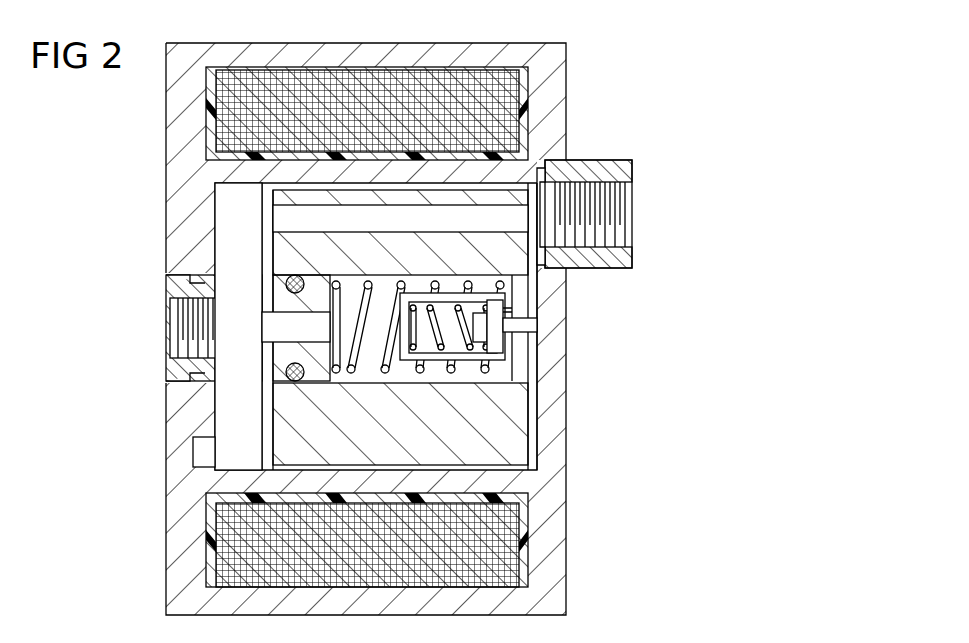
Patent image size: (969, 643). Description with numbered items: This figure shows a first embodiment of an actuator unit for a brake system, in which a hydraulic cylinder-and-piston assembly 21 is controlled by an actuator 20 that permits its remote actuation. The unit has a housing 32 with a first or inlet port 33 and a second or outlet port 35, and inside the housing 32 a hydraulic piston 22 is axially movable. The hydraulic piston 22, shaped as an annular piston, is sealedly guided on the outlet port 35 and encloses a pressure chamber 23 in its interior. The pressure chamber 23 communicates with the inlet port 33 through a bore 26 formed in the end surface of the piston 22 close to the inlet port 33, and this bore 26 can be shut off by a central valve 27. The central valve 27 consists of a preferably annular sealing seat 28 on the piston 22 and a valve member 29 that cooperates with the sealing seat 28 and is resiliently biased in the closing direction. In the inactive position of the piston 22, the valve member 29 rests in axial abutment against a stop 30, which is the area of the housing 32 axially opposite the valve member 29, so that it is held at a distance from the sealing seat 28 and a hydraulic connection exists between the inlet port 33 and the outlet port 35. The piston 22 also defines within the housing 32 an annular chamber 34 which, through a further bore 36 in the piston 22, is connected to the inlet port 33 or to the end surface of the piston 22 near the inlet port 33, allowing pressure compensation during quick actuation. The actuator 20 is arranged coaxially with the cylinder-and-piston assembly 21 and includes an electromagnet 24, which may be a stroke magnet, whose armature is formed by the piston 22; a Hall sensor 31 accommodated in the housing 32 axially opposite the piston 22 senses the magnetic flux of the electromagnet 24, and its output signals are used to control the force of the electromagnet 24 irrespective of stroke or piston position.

The actuator 20 is at (533, 92).
The hydraulic cylinder-and-piston assembly 21 is at (266, 391).
The hydraulic piston 22 is at (493, 435).
The pressure chamber 23 is at (378, 287).
The electromagnet 24 is at (483, 80).
The bore 26 is at (530, 325).
The central valve 27 is at (515, 305).
The sealing seat 28 is at (512, 346).
The valve member 29 is at (493, 378).
The stop 30 is at (505, 338).
The Hall sensor 31 is at (195, 451).
The housing 32 is at (188, 568).
The first (inlet) port 33 is at (628, 163).
The annular chamber 34 is at (225, 208).
The second (outlet) port 35 is at (178, 366).
The bore 36 is at (275, 222).